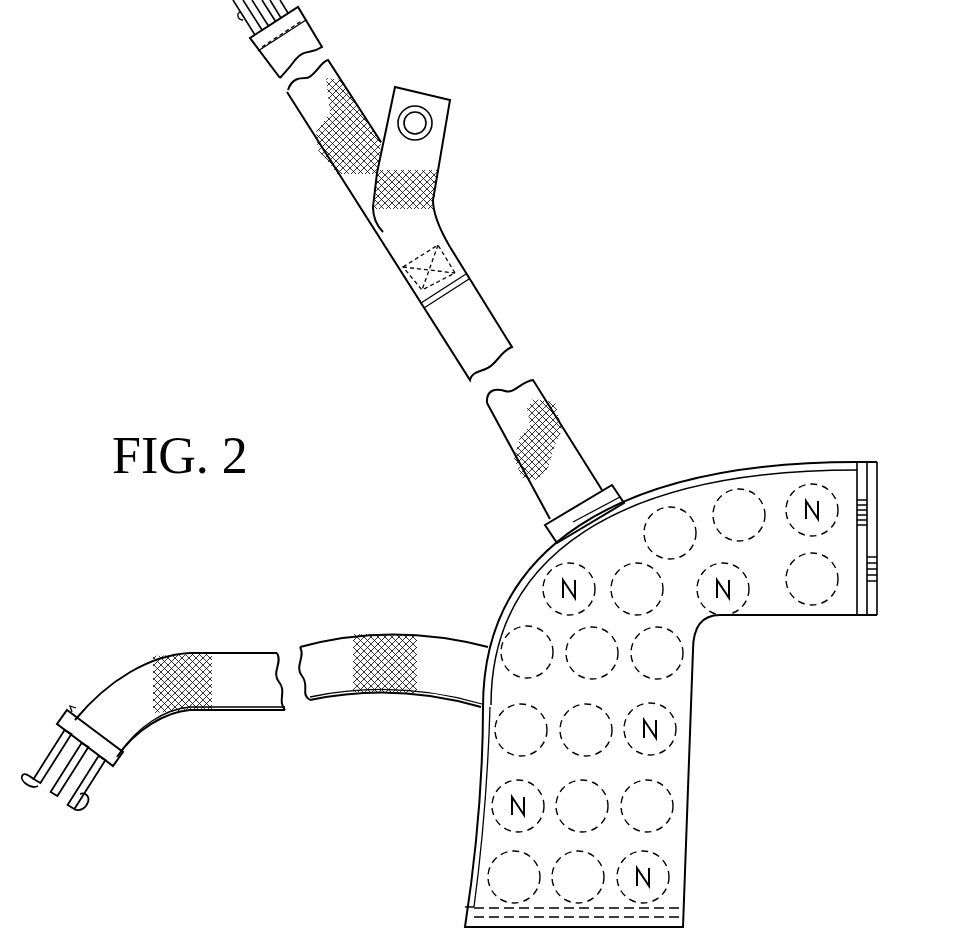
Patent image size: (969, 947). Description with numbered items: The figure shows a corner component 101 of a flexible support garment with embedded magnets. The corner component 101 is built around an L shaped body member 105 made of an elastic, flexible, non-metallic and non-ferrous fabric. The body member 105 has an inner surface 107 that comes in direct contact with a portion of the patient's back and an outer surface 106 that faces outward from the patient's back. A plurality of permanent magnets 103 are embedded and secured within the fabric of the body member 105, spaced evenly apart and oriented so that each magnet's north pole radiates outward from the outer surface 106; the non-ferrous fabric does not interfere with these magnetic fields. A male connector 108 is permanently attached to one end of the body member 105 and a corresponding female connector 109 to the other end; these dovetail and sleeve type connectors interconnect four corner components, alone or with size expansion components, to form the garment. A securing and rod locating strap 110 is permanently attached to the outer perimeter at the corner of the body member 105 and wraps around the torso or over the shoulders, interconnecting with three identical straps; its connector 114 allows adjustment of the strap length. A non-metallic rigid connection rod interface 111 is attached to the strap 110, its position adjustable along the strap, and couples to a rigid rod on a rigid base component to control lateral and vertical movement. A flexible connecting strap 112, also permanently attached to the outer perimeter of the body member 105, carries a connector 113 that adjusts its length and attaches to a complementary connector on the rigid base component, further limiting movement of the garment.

The corner component 101 is at (779, 294).
The permanent magnets 103 is at (658, 877).
The L shaped body member 105 is at (513, 597).
The outer surface 106 is at (711, 495).
The inner surface 107 is at (770, 602).
The male connector 108 is at (877, 615).
The female connector 109 is at (675, 920).
The securing and rod locating strap 110 is at (332, 140).
The non-metallic rigid connection rod interface 111 is at (430, 155).
The flexible connecting strap 112 is at (237, 677).
The connector 113 is at (120, 767).
The connector 114 is at (250, 38).